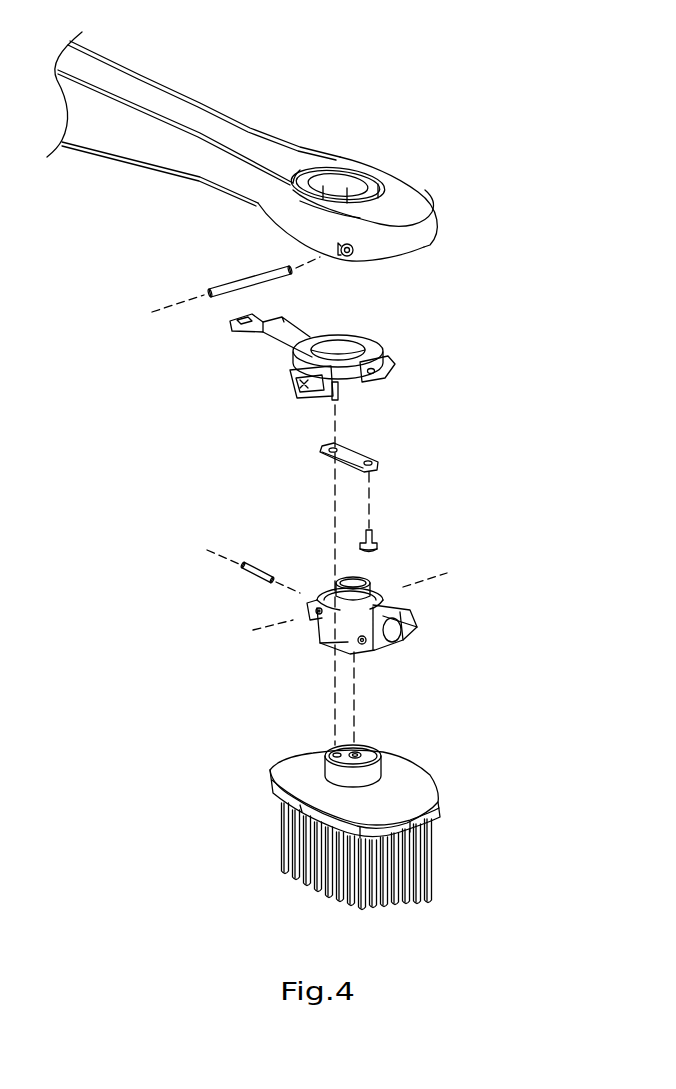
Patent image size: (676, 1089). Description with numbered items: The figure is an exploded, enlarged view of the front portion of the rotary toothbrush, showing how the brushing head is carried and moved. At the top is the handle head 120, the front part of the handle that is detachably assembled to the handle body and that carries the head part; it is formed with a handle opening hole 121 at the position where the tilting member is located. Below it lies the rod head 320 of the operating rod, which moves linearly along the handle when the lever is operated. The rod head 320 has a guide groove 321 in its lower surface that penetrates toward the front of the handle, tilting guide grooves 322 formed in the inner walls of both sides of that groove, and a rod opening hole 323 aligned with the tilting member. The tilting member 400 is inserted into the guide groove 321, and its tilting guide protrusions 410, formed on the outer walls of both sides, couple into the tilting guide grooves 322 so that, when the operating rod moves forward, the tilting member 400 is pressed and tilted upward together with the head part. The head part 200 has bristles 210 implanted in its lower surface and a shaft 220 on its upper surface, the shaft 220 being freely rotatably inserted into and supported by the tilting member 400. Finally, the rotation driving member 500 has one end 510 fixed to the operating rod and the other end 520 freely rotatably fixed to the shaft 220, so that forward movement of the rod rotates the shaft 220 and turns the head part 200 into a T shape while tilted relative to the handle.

The handle head 120 is at (183, 107).
The handle opening hole 121 is at (350, 167).
The head part 200 is at (393, 788).
The bristles 210 is at (430, 867).
The shaft 220 is at (373, 747).
The rod head 320 is at (280, 395).
The guide groove 321 is at (335, 393).
The tilting guide grooves 322 is at (297, 392).
The rod opening hole 323 is at (353, 340).
The tilting member 400 is at (365, 627).
The tilting guide protrusions 410 is at (290, 622).
The rotation driving member 500 is at (380, 465).
The one end of rotation driving member 510 is at (377, 467).
The other end of rotation driving member 520 is at (322, 450).